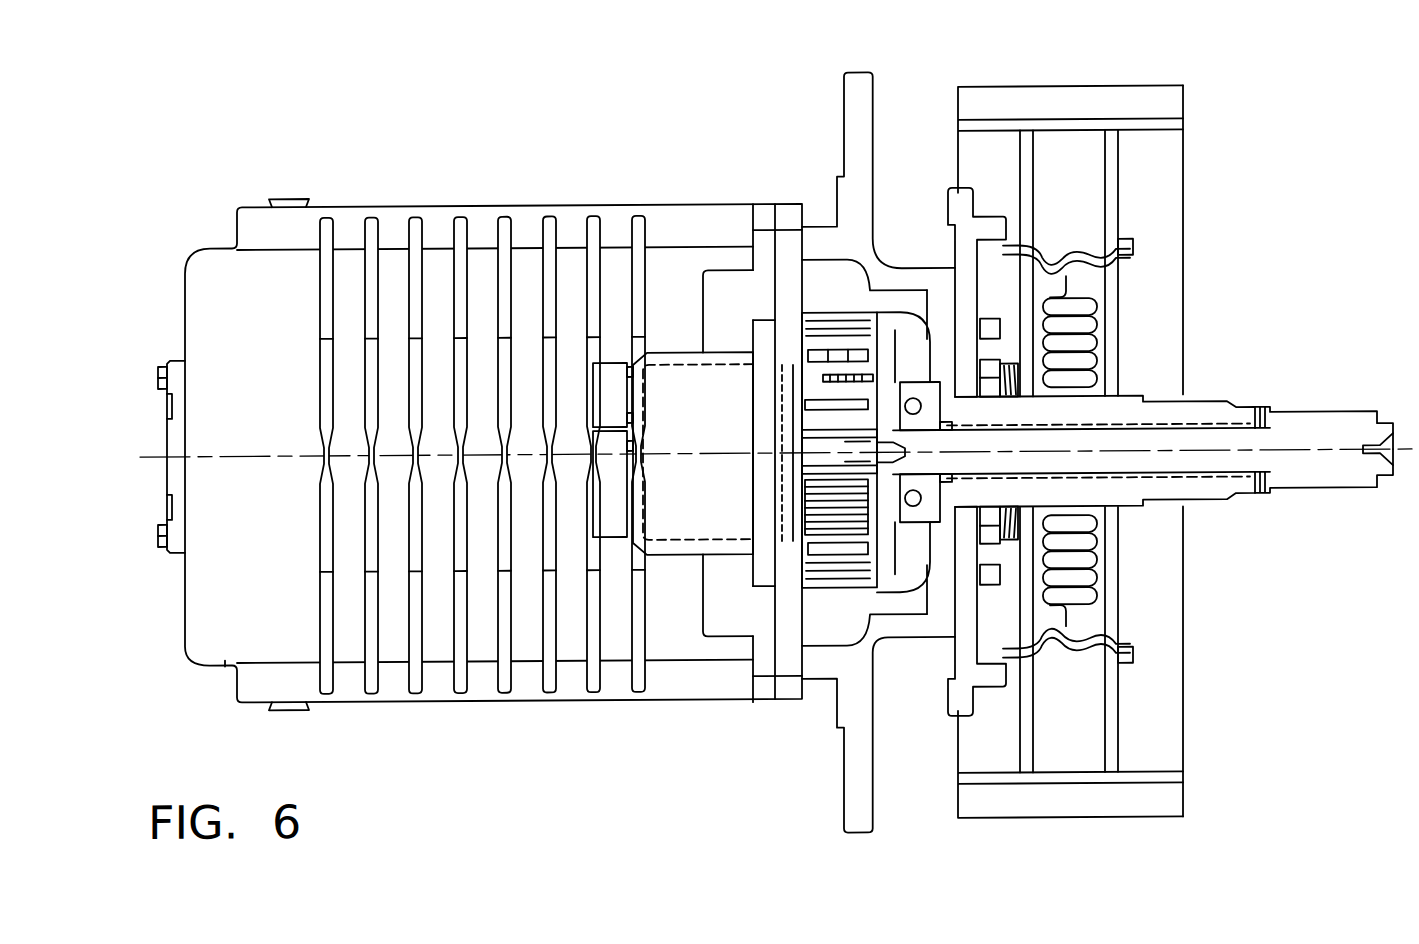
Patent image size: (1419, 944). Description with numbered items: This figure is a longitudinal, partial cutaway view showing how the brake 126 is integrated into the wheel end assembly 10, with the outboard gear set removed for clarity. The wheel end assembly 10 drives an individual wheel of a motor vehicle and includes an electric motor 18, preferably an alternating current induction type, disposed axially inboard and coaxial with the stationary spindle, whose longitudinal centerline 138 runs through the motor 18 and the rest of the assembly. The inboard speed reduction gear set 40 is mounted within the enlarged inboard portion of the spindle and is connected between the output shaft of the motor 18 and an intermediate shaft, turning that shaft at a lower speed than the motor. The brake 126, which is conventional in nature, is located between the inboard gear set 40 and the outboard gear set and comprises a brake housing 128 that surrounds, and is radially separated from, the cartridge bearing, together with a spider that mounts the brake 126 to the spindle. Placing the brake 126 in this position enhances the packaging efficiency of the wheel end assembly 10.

The wheel end assembly 10 is at (769, 453).
The electric motor 18 is at (225, 665).
The inboard speed reduction gear set 40 is at (755, 312).
The brake 126 is at (1071, 423).
The brake housing 128 is at (1165, 193).
The longitudinal centerline of motor 138 is at (206, 448).